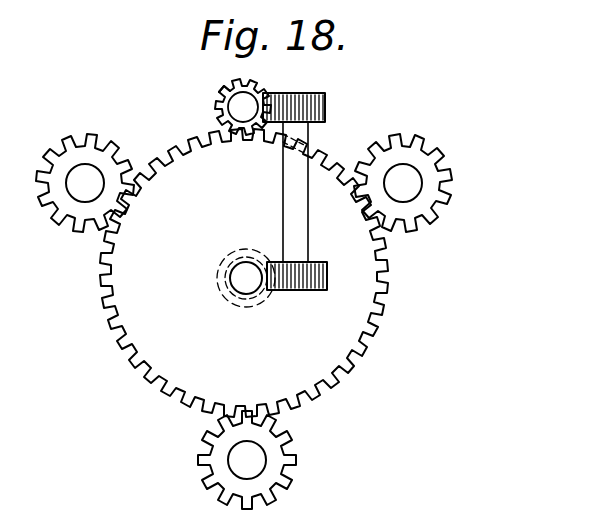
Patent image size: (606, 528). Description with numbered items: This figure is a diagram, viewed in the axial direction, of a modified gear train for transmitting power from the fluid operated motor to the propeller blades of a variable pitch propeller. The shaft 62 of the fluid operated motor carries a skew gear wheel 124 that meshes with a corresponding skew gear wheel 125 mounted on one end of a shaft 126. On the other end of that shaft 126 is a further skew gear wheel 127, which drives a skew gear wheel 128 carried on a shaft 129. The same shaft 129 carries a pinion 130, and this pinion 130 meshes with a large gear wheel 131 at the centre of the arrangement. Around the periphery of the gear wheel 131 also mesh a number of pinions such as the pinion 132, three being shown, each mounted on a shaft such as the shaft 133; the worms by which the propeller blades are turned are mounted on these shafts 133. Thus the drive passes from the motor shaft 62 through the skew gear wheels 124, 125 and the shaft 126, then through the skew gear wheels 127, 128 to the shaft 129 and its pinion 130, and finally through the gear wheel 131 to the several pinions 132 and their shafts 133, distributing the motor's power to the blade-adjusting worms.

The shaft 62 is at (248, 283).
The skew gear wheel 124 is at (217, 270).
The skew gear wheel 125 is at (297, 287).
The shaft 126 is at (297, 203).
The skew gear wheel 127 is at (325, 100).
The skew gear wheel 128 is at (222, 120).
The shaft 129 is at (245, 109).
The pinion 130 is at (228, 83).
The gear wheel 131 is at (123, 348).
The pinion 132 is at (45, 215).
The shaft 133 is at (88, 178).